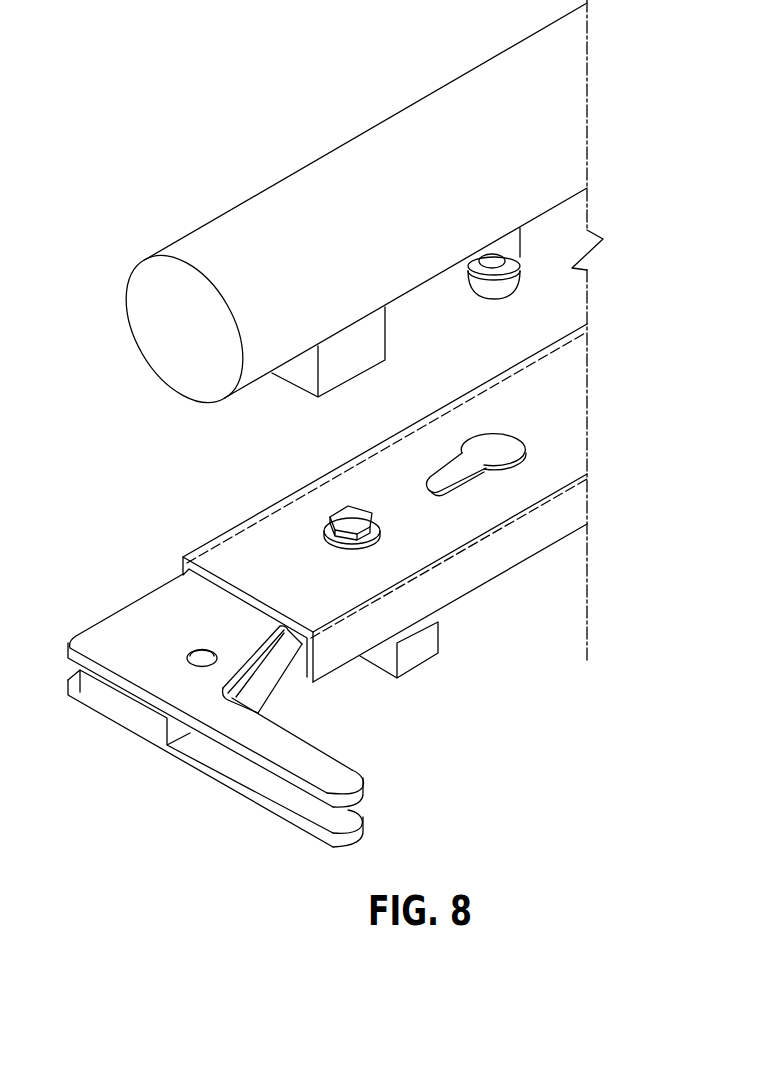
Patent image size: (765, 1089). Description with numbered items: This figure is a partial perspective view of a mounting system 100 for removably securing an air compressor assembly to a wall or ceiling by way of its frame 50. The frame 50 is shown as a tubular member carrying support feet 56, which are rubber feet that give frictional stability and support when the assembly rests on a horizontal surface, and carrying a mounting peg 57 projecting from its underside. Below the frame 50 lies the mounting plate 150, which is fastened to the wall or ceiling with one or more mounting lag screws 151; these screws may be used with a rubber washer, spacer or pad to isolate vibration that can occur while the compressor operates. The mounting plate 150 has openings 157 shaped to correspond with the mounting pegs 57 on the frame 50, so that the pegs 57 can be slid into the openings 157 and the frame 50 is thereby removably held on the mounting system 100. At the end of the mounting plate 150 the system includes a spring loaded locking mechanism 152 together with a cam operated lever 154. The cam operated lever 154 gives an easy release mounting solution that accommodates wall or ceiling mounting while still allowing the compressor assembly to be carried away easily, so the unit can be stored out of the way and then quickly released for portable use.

The frame 50 is at (373, 173).
The support feet 56 is at (347, 348).
The mounting pegs 57 is at (502, 247).
The mounting system 100 is at (570, 441).
The mounting plate 150 is at (470, 553).
The mounting lag screws 151 is at (342, 518).
The spring loaded locking mechanism 152 is at (277, 645).
The cam operated lever 154 is at (337, 780).
The openings 157 is at (493, 455).